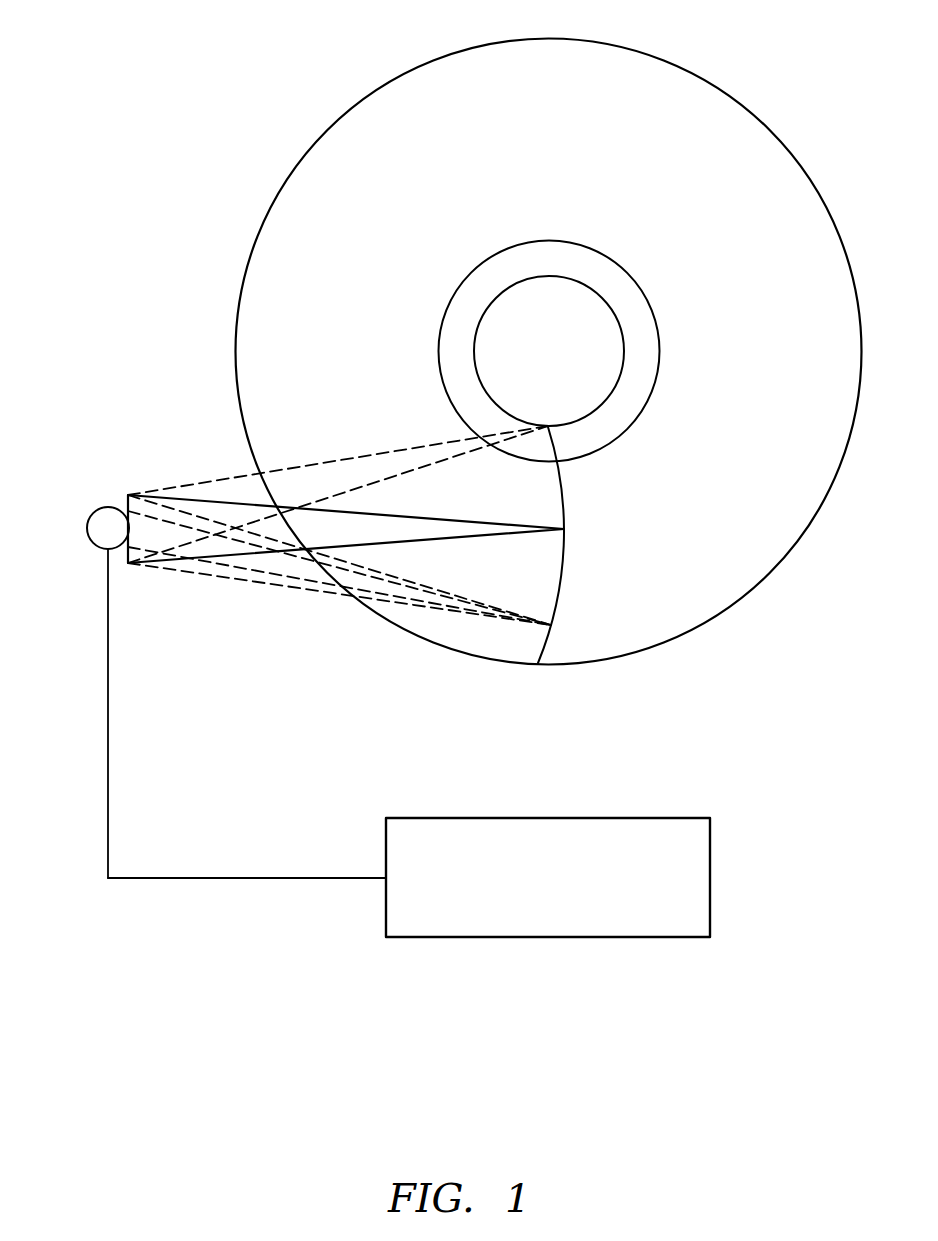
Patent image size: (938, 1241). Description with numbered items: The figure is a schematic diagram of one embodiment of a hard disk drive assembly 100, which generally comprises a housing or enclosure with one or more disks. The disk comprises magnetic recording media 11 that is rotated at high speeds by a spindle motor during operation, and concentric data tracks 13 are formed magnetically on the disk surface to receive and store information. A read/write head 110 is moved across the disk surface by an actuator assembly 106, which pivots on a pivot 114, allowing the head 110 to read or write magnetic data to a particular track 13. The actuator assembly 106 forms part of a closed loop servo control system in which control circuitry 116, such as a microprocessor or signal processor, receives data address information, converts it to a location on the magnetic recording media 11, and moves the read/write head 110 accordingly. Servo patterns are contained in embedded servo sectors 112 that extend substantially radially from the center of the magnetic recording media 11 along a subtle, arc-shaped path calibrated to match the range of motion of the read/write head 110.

The hard disk drive assembly 100 is at (237, 54).
The magnetic recording media 11 is at (562, 168).
The concentric data tracks 13 is at (662, 347).
The actuator assembly 106 is at (195, 482).
The read/write head 110 is at (493, 537).
The servo sectors 112 is at (563, 480).
The pivot 114 is at (88, 543).
The control circuitry 116 is at (568, 892).